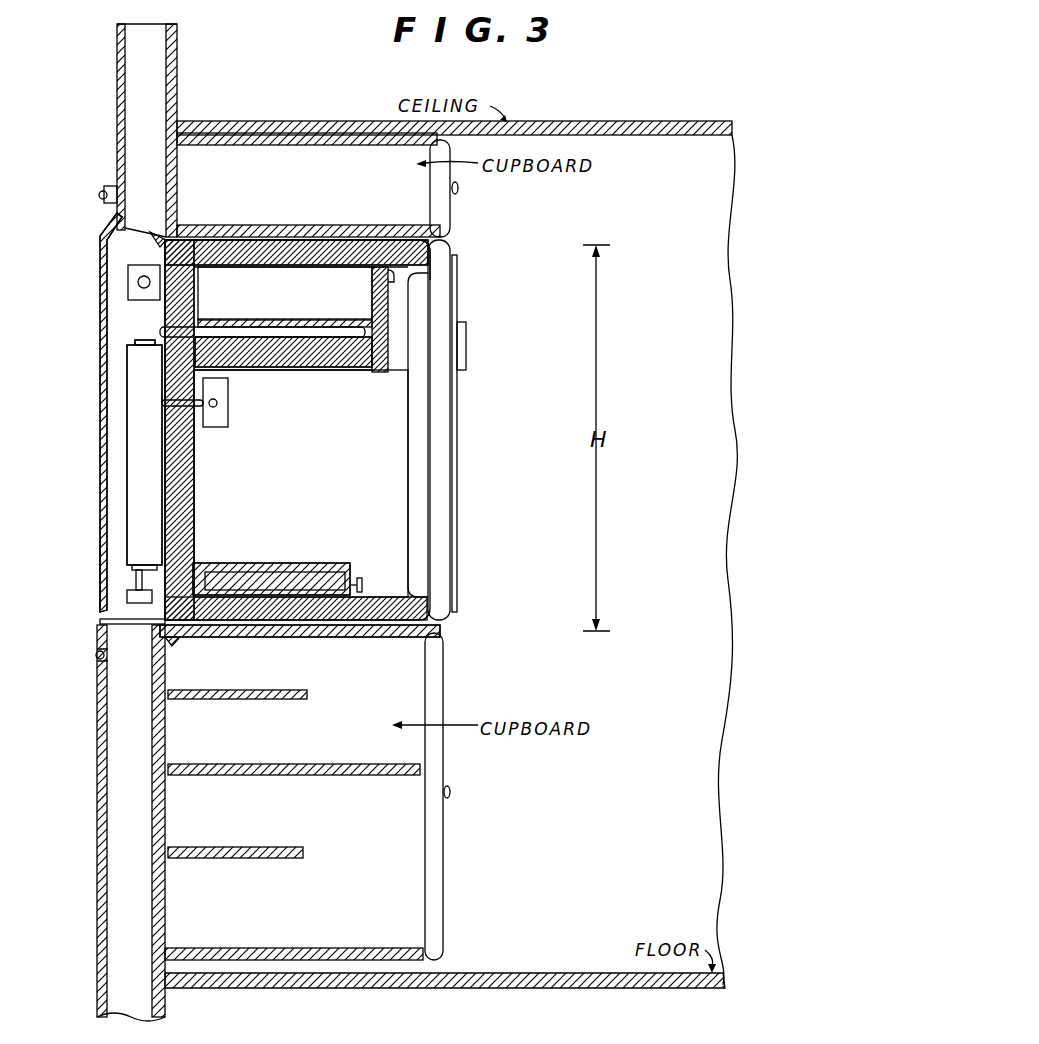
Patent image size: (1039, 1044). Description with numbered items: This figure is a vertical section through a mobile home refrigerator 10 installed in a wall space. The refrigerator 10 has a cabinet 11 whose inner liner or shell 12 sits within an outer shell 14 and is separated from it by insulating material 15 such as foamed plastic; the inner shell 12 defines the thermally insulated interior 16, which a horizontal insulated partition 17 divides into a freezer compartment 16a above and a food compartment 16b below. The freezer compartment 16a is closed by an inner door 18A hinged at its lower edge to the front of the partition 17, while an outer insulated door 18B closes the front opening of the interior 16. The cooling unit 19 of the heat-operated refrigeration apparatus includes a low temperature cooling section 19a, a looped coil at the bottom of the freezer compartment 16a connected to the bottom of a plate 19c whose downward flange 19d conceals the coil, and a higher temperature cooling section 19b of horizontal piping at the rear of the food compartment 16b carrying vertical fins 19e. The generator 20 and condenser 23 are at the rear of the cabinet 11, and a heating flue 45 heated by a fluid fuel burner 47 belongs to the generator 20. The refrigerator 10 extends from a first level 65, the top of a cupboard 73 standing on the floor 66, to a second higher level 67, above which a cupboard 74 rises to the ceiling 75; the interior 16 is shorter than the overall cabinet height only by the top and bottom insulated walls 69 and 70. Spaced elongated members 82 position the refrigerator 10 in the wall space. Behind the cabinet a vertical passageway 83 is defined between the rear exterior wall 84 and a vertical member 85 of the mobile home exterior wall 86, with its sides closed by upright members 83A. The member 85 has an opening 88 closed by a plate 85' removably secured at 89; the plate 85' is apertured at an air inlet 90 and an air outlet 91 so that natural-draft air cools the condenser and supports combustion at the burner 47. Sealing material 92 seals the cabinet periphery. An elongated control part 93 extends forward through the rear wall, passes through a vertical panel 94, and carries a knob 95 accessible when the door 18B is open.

The mobile home refrigerator 10 is at (475, 272).
The cabinet 11 is at (402, 628).
The inner liner or shell 12 is at (194, 487).
The outer shell 14 is at (408, 266).
The insulating material 15 is at (190, 528).
The thermally insulated interior 16 is at (382, 468).
The freezer compartment 16a is at (290, 301).
The food compartment 16b is at (345, 448).
The horizontal insulated partition 17 is at (330, 360).
The inner door 18A is at (390, 320).
The outer insulated door 18B is at (458, 406).
The cooling unit or evaporator structure 19 is at (259, 368).
The low temperature cooling section 19a is at (230, 312).
The higher temperature cooling unit section 19b is at (227, 405).
The plate 19c is at (356, 324).
The downward extending flange 19d is at (467, 342).
The fins 19e is at (222, 434).
The generator 20 is at (127, 452).
The condenser 23 is at (128, 283).
The second heating flue 45 is at (134, 344).
The fluid fuel burner 47 is at (135, 578).
The first level 65 is at (430, 627).
The floor 66 is at (578, 972).
The second higher level 67 is at (425, 236).
The top insulated wall 69 is at (277, 256).
The bottom insulated wall 70 is at (330, 637).
The cupboard 73 is at (428, 895).
The cupboard 74 is at (348, 192).
The ceiling 75 is at (633, 138).
The spaced elongated members 82 is at (136, 637).
The vertical passageway 83 is at (127, 503).
The spaced upright members 83A is at (107, 386).
The rear exterior wall 84 is at (160, 331).
The vertical member 85 is at (121, 130).
The plate 85' is at (80, 412).
The exterior wall 86 is at (100, 570).
The opening 88 is at (105, 622).
The securing location 89 is at (99, 195).
The air inlet 90 is at (126, 597).
The air outlet 91 is at (100, 250).
The sealing material 92 is at (158, 243).
The elongated part 93 is at (276, 565).
The vertically extending panel 94 is at (355, 575).
The knob 95 is at (363, 585).